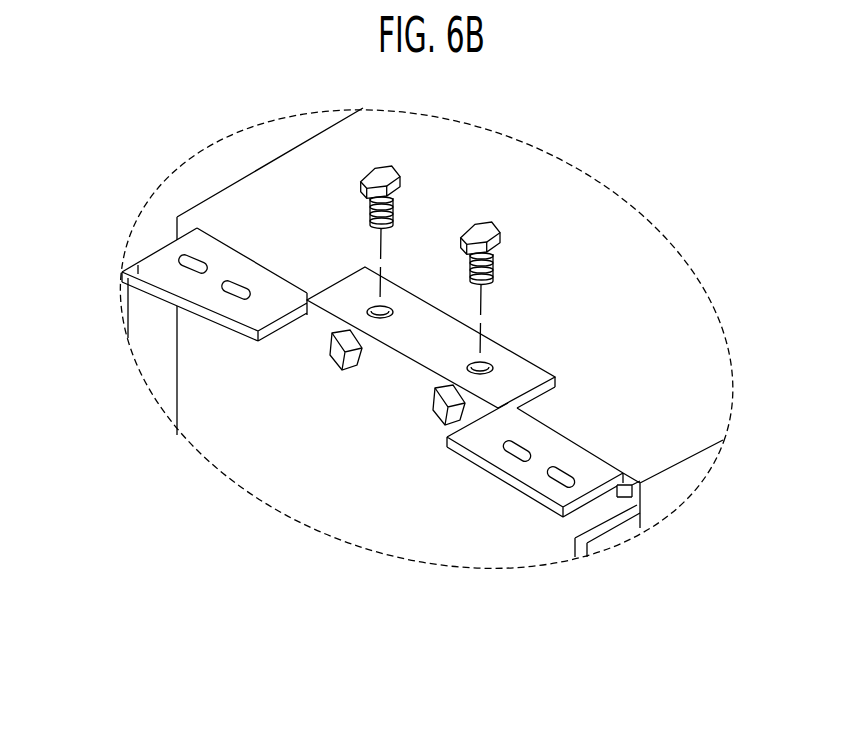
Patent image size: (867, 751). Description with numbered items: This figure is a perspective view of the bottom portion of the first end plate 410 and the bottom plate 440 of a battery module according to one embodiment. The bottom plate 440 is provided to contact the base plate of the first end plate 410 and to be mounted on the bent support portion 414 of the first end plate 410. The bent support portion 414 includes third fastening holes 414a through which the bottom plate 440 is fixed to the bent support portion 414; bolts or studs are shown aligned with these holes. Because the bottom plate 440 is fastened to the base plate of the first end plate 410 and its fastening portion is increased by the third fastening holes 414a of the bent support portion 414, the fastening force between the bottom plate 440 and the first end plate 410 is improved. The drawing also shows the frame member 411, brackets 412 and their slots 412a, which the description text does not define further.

The first end plate 410 is at (297, 472).
The frame bar 411 is at (162, 325).
The bracket 412 is at (180, 278).
The slot 412a is at (231, 283).
The bent support portion 414 is at (528, 382).
The third fastening holes 414a is at (489, 362).
The bottom plate 440 is at (679, 314).